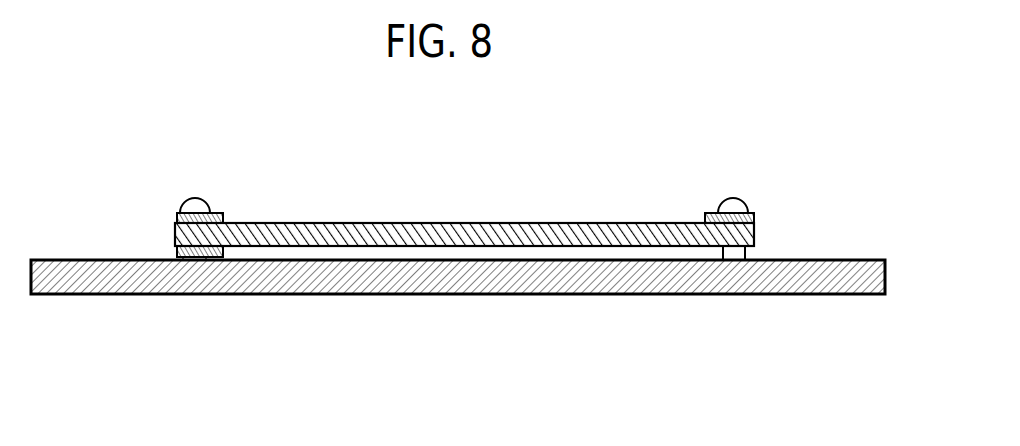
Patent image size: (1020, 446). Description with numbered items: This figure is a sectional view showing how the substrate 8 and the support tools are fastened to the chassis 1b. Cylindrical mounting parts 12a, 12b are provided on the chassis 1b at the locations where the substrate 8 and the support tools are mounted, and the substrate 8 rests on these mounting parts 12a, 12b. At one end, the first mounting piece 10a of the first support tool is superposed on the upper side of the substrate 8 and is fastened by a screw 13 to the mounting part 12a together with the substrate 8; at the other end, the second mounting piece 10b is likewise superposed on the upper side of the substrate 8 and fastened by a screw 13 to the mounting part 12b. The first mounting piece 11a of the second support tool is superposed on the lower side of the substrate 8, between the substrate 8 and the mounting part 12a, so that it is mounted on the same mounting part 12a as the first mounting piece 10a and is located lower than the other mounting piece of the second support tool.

The chassis 1b is at (539, 283).
The substrate 8 is at (395, 223).
The first mounting piece 10a is at (177, 215).
The second mounting piece 10b is at (754, 217).
The first mounting piece 11a is at (177, 250).
The mounting part 12a is at (195, 258).
The mounting part 12b is at (735, 250).
The screw 13 is at (193, 198).